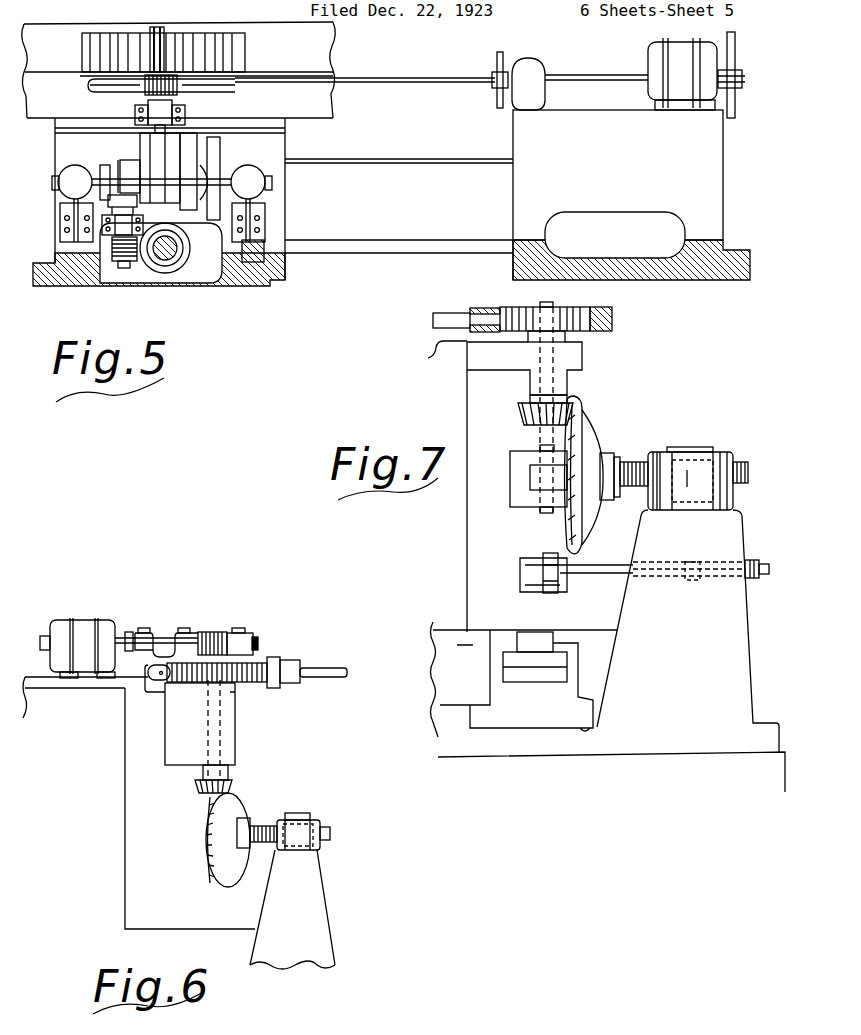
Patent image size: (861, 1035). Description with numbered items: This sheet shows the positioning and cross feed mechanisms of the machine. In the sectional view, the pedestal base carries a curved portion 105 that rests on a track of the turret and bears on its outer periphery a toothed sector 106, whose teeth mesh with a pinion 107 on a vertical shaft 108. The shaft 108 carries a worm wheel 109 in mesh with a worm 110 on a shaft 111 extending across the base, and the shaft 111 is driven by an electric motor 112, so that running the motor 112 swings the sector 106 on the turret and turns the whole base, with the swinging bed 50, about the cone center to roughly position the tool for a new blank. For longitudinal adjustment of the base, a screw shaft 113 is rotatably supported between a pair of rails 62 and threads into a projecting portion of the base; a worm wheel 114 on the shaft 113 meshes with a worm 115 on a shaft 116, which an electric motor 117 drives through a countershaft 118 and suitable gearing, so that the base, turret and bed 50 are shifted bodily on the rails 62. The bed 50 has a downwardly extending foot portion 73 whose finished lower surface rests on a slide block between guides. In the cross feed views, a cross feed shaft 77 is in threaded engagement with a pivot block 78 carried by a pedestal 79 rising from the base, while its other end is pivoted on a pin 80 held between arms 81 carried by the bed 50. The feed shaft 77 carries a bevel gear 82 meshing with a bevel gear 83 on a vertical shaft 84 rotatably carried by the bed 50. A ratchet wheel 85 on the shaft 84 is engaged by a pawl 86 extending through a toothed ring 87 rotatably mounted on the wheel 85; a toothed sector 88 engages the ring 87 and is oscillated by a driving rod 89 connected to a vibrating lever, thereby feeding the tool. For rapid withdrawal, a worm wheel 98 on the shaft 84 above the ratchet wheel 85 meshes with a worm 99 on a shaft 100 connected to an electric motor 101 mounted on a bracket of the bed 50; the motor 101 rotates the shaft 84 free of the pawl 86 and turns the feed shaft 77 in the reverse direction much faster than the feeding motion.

In FIG. 7, the swinging bed 50 is at (469, 520).
In FIG. 5, the rails 62 is at (268, 268).
In FIG. 7, the foot portion 73 is at (543, 667).
In FIG. 7, the cross feed shaft 77 is at (628, 462).
In FIG. 6, the cross feed shaft 77 is at (275, 828).
In FIG. 7, the pivot block 78 is at (695, 448).
In FIG. 6, the pivot block 78 is at (300, 816).
In FIG. 7, the pedestal 79 is at (608, 651).
In FIG. 6, the pedestal 79 is at (318, 888).
In FIG. 7, the pin 80 is at (541, 445).
In FIG. 7, the arms 81 is at (535, 461).
In FIG. 7, the bevel gear 82 is at (580, 430).
In FIG. 6, the bevel gear 82 is at (214, 876).
In FIG. 7, the bevel gear 83 is at (522, 413).
In FIG. 6, the bevel gear 83 is at (200, 786).
In FIG. 7, the vertical shaft 84 is at (546, 305).
In FIG. 6, the vertical shaft 84 is at (222, 746).
In FIG. 7, the ratchet wheel 85 is at (588, 308).
In FIG. 7, the pawl 86 is at (466, 321).
In FIG. 6, the pawl 86 is at (160, 676).
In FIG. 7, the toothed ring 87 is at (485, 308).
In FIG. 6, the toothed ring 87 is at (240, 684).
In FIG. 6, the toothed sector 88 is at (262, 663).
In FIG. 6, the driving rod 89 is at (325, 670).
In FIG. 6, the worm wheel 98 is at (249, 630).
In FIG. 6, the worm 99 is at (210, 632).
In FIG. 6, the shaft 100 is at (163, 633).
In FIG. 6, the electric motor 101 is at (82, 620).
In FIG. 5, the curved portion 105 is at (330, 88).
In FIG. 5, the toothed sector 106 is at (245, 56).
In FIG. 5, the pinion 107 is at (148, 52).
In FIG. 5, the vertical shaft 108 is at (137, 126).
In FIG. 5, the worm wheel 109 is at (95, 86).
In FIG. 5, the worm 110 is at (185, 93).
In FIG. 5, the shaft 111 is at (400, 78).
In FIG. 5, the electric motor 112 is at (674, 50).
In FIG. 5, the screw shaft 113 is at (172, 262).
In FIG. 5, the worm wheel 114 is at (150, 280).
In FIG. 5, the worm 115 is at (112, 255).
In FIG. 5, the shaft 116 is at (125, 268).
In FIG. 5, the electric motor 117 is at (155, 149).
In FIG. 5, the countershaft 118 is at (203, 190).